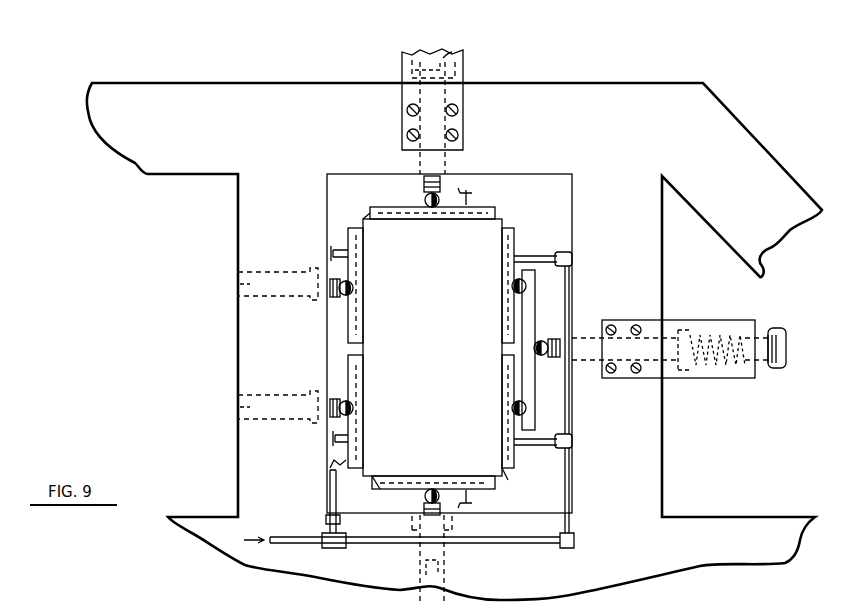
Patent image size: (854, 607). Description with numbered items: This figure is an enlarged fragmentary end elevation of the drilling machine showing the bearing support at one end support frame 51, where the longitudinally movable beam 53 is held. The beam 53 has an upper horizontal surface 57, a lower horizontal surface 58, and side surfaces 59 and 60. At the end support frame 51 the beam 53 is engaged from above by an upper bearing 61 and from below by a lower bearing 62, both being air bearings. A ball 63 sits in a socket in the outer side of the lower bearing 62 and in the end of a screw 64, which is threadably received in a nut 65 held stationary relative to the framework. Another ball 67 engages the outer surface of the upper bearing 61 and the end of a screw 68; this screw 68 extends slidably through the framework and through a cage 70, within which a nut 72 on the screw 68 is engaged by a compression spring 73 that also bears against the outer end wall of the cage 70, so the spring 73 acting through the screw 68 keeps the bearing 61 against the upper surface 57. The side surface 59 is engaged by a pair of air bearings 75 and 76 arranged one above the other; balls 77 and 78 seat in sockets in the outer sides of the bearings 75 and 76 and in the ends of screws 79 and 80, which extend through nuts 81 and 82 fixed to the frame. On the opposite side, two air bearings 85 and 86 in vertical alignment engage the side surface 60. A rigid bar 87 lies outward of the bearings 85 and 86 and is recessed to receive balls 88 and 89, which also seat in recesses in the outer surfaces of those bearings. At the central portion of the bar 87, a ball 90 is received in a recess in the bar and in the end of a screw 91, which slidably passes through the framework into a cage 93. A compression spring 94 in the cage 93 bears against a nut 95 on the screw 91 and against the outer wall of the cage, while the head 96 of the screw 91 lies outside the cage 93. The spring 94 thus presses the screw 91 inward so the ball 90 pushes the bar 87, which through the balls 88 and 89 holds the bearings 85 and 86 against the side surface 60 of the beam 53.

The support frame 51 is at (238, 216).
The beam 53 is at (454, 339).
The upper horizontal surface 57 is at (494, 210).
The lower horizontal surface 58 is at (374, 484).
The side surface 59 is at (362, 224).
The side surface 60 is at (514, 460).
The upper bearing 61 is at (484, 202).
The lower bearing 62 is at (414, 487).
The ball 63 is at (434, 488).
The screw 64 is at (441, 508).
The nut 65 is at (410, 522).
The ball 67 is at (425, 200).
The screw 68 is at (424, 180).
The cage 70 is at (465, 82).
The nut 72 is at (405, 69).
The compression spring 73 is at (446, 50).
The bearing 75 is at (348, 238).
The bearing 76 is at (346, 457).
The ball 77 is at (350, 283).
The ball 78 is at (352, 404).
The screw 79 is at (340, 300).
The screw 80 is at (336, 400).
The nut 81 is at (316, 304).
The nut 82 is at (314, 424).
The air bearing 85 is at (514, 232).
The air bearing 86 is at (508, 470).
The rigid bar 87 is at (536, 392).
The ball 88 is at (513, 282).
The ball 89 is at (513, 406).
The ball 90 is at (541, 341).
The screw 91 is at (552, 358).
The cage 93 is at (706, 320).
The compression spring 94 is at (716, 380).
The nut 95 is at (678, 380).
The head 96 is at (777, 369).